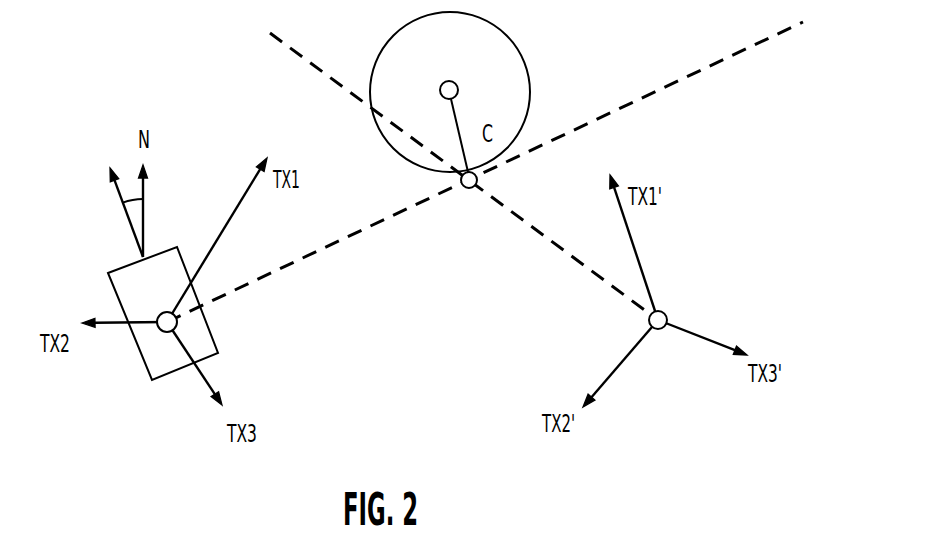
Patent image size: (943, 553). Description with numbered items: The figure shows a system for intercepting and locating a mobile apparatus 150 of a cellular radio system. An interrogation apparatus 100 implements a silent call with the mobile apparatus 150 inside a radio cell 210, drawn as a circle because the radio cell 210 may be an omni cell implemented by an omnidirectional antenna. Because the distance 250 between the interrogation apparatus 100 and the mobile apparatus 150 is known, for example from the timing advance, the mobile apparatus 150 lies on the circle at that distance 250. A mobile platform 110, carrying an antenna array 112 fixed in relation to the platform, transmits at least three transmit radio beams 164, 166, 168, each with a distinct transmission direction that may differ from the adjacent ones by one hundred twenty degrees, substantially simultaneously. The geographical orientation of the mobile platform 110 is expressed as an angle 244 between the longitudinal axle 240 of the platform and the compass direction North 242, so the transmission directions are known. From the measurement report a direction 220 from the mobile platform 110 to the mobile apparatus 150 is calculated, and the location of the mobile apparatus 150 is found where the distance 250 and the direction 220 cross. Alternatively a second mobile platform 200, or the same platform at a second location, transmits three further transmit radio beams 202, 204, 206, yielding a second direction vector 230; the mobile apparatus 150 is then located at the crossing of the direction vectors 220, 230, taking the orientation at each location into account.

The interrogation apparatus 100 is at (449, 81).
The mobile platform 110 is at (163, 302).
The antenna array 112 is at (160, 330).
The mobile apparatus 150 is at (469, 188).
The transmit radio beam 164 is at (234, 227).
The transmit radio beam 166 is at (103, 311).
The transmit radio beam 168 is at (212, 366).
The second mobile platform 200 is at (663, 330).
The further transmit radio beam 202 is at (634, 234).
The further transmit radio beam 204 is at (600, 363).
The further transmit radio beam 206 is at (719, 337).
The radio cell 210 is at (502, 113).
The direction vector 220 is at (279, 270).
The direction vector 230 is at (557, 246).
The longitudinal axle 240 is at (125, 214).
The compass direction North 242 is at (143, 212).
The angle 244 is at (110, 168).
The distance 250 is at (453, 118).